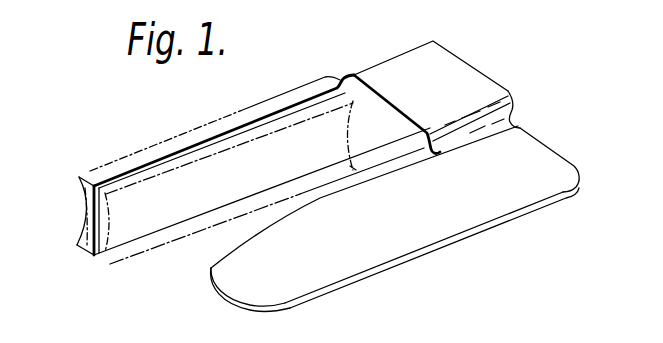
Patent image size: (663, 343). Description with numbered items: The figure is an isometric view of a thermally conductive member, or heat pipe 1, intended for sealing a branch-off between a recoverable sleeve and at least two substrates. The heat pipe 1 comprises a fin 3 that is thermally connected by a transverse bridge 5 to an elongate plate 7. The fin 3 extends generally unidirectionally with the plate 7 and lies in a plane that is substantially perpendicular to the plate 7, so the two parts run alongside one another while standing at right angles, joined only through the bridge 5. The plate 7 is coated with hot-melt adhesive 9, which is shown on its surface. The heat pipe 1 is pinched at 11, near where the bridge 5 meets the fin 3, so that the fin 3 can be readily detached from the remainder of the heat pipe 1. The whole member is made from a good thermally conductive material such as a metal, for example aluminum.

The heat pipe 1 is at (439, 34).
The fin 3 is at (343, 250).
The transverse bridge 5 is at (463, 78).
The elongate plate 7 is at (148, 210).
The hot-melt adhesive 9 is at (84, 243).
The pinch 11 is at (508, 92).